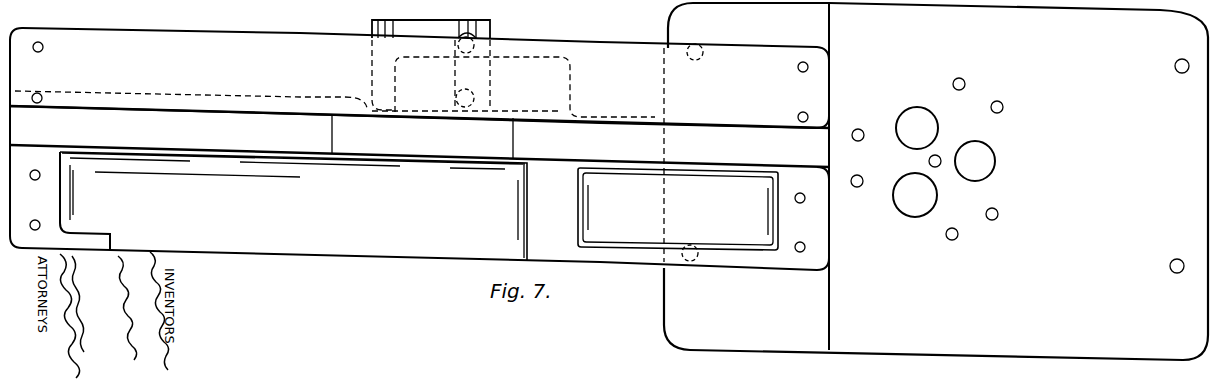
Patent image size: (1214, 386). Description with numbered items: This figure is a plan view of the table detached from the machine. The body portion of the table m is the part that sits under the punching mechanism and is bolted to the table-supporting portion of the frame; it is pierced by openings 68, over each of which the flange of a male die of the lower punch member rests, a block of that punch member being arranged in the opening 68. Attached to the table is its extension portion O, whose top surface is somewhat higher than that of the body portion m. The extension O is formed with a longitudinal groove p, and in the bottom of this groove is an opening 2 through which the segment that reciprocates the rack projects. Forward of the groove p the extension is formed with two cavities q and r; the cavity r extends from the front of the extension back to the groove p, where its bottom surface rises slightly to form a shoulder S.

The table m is at (936, 181).
The opening 68 is at (996, 160).
The longitudinal groove p is at (419, 140).
The opening 2 is at (419, 140).
The extension portion O is at (419, 202).
The cavity r is at (293, 206).
The shoulder S is at (228, 155).
The cavity q is at (678, 209).